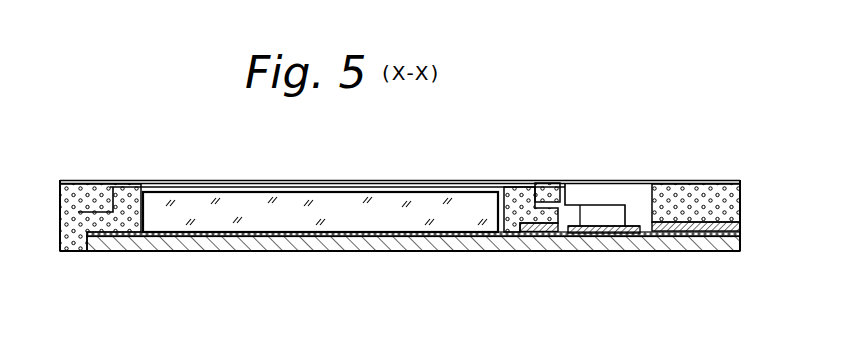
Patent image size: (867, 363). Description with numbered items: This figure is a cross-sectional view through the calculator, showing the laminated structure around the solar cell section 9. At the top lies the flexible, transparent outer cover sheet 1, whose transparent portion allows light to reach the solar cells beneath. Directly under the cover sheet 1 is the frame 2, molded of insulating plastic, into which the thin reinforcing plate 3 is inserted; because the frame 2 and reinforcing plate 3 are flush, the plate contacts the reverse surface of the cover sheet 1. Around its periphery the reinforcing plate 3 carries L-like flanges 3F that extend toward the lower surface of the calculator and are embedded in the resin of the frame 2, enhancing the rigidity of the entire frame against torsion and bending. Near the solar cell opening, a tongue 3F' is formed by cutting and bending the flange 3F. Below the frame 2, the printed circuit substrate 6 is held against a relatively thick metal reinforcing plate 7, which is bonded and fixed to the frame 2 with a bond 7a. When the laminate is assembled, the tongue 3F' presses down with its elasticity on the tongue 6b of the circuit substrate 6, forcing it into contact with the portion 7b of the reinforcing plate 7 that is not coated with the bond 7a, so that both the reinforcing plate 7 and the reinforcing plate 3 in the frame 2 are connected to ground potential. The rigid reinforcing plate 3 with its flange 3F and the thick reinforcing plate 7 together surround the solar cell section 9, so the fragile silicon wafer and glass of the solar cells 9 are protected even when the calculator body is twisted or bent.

The outer cover sheet 1 is at (358, 192).
The frame 2 is at (70, 212).
The reinforcing plate 3 is at (156, 187).
The flange 3F is at (351, 178).
The tongue 3F' is at (604, 178).
The printed circuit substrate 6 is at (532, 235).
The tongue of the circuit substrate 6b is at (608, 235).
The reinforcing plate 7 is at (288, 247).
The bond 7a is at (229, 236).
The portion of the reinforcing plate not coated with the bond 7b is at (562, 233).
The solar cell section 9 is at (255, 205).